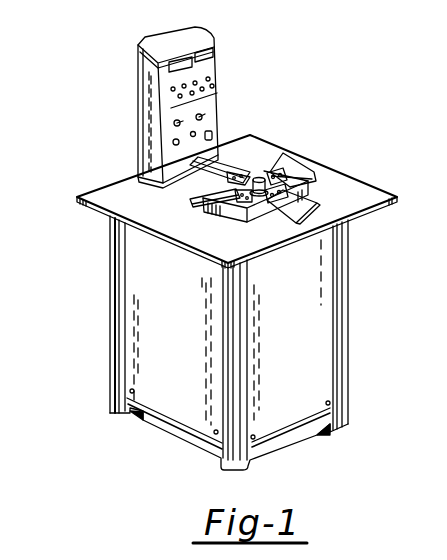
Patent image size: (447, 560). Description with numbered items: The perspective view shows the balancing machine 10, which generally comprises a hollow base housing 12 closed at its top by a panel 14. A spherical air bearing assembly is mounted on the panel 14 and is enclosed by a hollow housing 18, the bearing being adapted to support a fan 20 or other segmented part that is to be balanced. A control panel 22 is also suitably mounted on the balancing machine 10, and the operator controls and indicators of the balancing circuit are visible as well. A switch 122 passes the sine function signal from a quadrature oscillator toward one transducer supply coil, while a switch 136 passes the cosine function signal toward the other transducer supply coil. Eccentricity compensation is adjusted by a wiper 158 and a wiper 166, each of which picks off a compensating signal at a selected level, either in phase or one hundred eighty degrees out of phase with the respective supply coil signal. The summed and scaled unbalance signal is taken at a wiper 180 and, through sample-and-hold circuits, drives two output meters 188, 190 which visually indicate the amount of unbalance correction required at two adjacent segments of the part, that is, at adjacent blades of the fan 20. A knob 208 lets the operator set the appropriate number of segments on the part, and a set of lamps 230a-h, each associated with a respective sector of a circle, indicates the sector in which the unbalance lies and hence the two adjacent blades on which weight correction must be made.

The balancing machine 10 is at (221, 240).
The hollow base housing 12 is at (113, 325).
The panel 14 is at (367, 188).
The hollow housing 18 is at (230, 218).
The fan 20 is at (304, 165).
The control panel 22 is at (158, 99).
The switch 122 is at (96, 125).
The switch 136 is at (173, 124).
The wiper 158 is at (193, 137).
The wiper 166 is at (173, 142).
The wiper 180 is at (215, 133).
The output meter 188 is at (167, 67).
The output meter 190 is at (212, 52).
The knob 208 is at (204, 115).
The lamps 230a-h is at (171, 98).